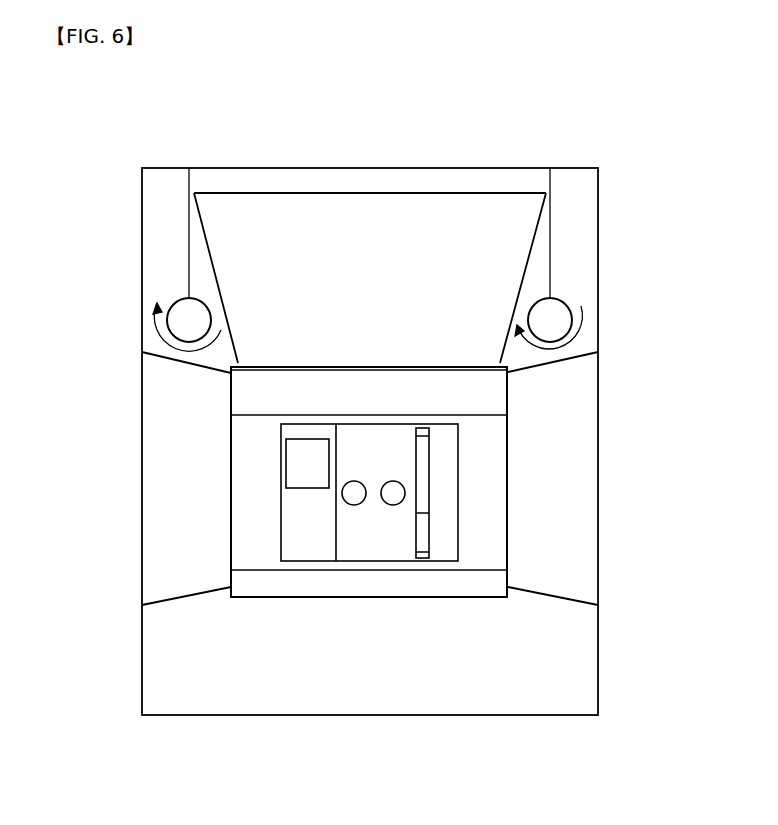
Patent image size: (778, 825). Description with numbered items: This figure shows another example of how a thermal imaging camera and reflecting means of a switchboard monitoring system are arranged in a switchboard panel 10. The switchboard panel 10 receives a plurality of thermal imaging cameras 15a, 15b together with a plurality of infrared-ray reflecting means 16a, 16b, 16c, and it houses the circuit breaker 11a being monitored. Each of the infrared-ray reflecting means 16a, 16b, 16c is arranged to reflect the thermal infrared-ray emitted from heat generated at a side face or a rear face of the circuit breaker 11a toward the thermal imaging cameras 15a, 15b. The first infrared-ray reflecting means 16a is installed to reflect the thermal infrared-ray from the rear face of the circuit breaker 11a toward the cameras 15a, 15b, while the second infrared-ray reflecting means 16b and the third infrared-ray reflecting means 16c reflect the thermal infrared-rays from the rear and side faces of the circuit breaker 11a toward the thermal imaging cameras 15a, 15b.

The switchboard panel 10 is at (598, 190).
The circuit breaker 11a is at (250, 524).
The thermal imaging camera 15a is at (170, 300).
The thermal imaging camera 15b is at (567, 300).
The first infrared-ray reflecting means 16a is at (374, 205).
The second infrared-ray reflecting means 16b is at (153, 423).
The third infrared-ray reflecting means 16c is at (587, 422).